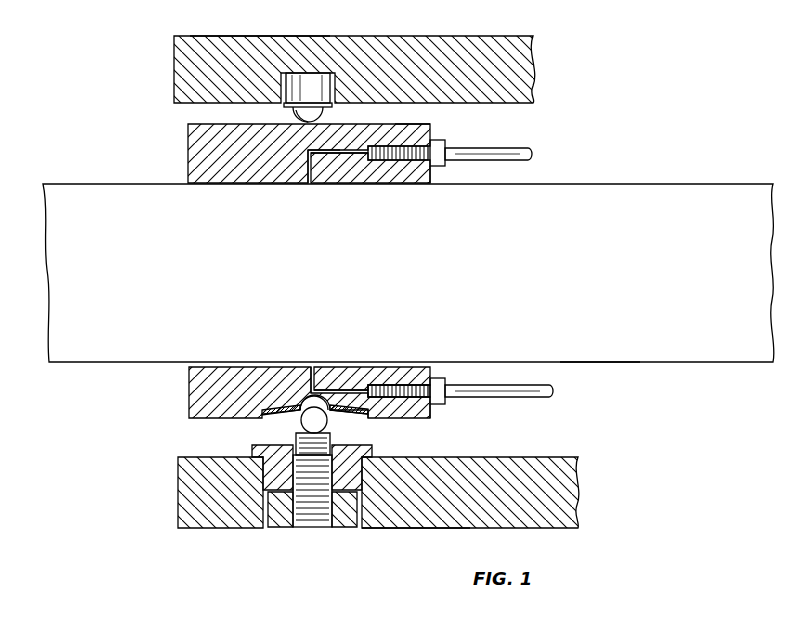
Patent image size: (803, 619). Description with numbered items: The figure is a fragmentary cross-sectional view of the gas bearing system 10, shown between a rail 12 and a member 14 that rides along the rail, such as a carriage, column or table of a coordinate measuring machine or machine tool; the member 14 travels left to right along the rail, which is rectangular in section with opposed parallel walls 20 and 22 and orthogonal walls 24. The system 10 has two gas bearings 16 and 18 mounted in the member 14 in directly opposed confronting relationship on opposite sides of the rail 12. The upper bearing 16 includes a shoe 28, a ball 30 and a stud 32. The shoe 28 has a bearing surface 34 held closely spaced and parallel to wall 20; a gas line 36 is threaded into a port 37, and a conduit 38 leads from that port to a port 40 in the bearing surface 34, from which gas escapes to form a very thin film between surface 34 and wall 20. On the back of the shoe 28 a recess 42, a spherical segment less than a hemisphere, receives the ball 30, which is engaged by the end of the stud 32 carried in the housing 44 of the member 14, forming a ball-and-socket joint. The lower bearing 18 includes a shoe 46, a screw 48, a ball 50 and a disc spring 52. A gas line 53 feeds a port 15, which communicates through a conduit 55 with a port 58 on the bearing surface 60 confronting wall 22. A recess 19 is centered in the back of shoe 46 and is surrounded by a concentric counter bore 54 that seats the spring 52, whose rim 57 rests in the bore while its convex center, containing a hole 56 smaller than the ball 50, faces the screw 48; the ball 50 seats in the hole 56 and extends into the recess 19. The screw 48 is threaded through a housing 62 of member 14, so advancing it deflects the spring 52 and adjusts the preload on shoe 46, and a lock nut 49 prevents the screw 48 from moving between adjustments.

The gas bearing system 10 is at (158, 452).
The rail 12 is at (632, 183).
The member 14 is at (535, 73).
The port 15 is at (393, 390).
The gas bearing 16 is at (176, 116).
The gas bearing 18 is at (150, 407).
The recess 19 is at (302, 402).
The wall 20 is at (322, 188).
The wall 22 is at (609, 361).
The orthogonal walls 24 is at (612, 268).
The shoe 28 is at (188, 152).
The ball 30 is at (323, 115).
The stud 32 is at (305, 88).
The bearing surface 34 is at (432, 176).
The gas line 36 is at (500, 147).
The threaded port 37 is at (428, 131).
The conduit 38 is at (309, 175).
The port 40 is at (312, 183).
The recess 42 is at (292, 116).
The housing 44 is at (258, 36).
The shoe 46 is at (430, 414).
The screw 48 is at (265, 450).
The lock nut 49 is at (352, 522).
The ball 50 is at (300, 431).
The disc spring 52 is at (358, 414).
The gas line 53 is at (530, 398).
The counter bore 54 is at (348, 410).
The conduit 55 is at (334, 386).
The hole 56 is at (326, 428).
The rim 57 is at (262, 411).
The port 58 is at (312, 388).
The bearing surface 60 is at (210, 367).
The housing 62 is at (397, 528).